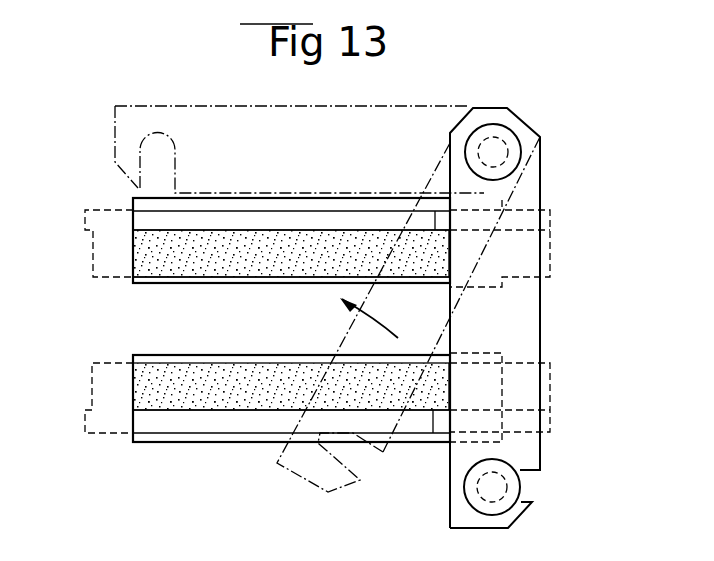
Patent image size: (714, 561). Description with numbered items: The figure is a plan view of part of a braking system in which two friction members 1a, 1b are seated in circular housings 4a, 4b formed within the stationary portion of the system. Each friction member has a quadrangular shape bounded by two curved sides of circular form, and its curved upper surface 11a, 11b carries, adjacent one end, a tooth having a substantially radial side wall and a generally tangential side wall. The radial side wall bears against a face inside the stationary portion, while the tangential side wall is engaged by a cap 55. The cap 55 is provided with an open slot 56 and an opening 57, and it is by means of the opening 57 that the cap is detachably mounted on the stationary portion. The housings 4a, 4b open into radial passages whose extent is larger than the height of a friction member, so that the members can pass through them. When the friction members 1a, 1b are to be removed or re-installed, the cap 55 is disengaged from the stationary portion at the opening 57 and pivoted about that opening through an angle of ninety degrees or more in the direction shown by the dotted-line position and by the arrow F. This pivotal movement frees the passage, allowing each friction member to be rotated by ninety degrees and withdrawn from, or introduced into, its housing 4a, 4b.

The cap 55 is at (230, 133).
The opening 57 is at (505, 145).
The open slot 56 is at (522, 485).
The circular housing 4a is at (377, 207).
The circular housing 4b is at (253, 440).
The upper surface 11a is at (162, 223).
The upper surface 11b is at (168, 415).
The friction member 1a is at (232, 253).
The friction member 1b is at (228, 385).
The arrow F is at (369, 318).